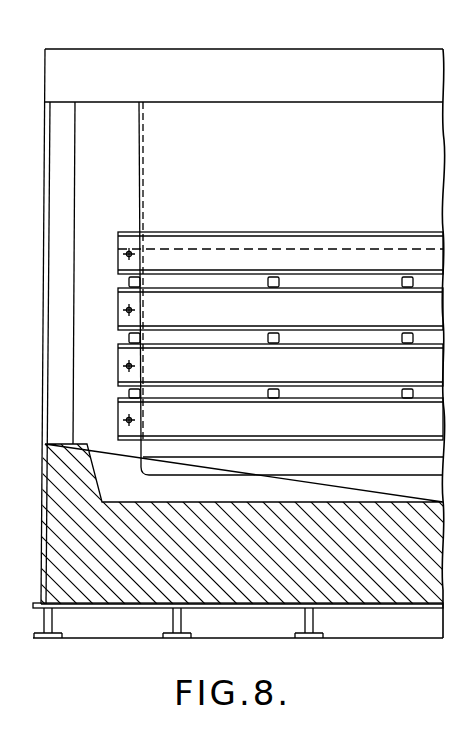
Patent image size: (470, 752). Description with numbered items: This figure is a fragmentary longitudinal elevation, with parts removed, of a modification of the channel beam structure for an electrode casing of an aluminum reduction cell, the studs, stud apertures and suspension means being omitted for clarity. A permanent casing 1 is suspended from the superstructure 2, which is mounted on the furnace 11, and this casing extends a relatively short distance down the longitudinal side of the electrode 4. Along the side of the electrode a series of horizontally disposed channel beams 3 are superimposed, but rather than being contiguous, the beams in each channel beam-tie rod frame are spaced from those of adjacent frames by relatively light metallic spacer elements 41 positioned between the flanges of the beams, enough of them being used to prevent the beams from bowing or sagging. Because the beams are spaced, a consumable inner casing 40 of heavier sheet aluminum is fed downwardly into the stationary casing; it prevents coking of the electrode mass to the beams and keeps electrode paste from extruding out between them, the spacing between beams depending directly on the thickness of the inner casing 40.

The permanent casing 1 is at (132, 157).
The superstructure 2 is at (259, 56).
The channel beam 3 is at (117, 252).
The electrode 4 is at (282, 477).
The furnace 11 is at (53, 497).
The inner casing 40 is at (149, 453).
The spacer element 41 is at (140, 282).